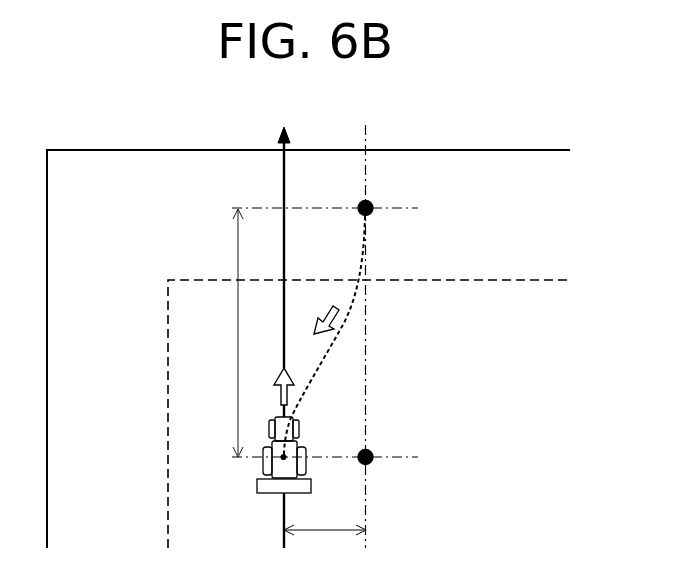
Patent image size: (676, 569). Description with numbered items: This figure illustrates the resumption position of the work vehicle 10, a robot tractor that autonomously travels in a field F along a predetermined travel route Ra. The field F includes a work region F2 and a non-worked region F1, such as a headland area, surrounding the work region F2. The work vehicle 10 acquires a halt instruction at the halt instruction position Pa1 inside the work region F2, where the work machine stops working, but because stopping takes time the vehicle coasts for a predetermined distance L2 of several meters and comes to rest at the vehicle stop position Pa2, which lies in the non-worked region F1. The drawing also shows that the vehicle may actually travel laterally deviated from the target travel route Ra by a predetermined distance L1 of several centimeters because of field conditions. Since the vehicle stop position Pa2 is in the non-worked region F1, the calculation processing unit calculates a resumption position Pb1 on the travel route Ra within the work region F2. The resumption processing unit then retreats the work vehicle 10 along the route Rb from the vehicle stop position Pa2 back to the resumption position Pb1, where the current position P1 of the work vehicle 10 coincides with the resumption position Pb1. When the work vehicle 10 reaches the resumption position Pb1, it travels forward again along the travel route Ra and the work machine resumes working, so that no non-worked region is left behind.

The field F is at (150, 150).
The non-worked region F1 is at (500, 170).
The work region F2 is at (528, 283).
The work vehicle 10 is at (308, 420).
The travel route Ra is at (283, 516).
The route Rb is at (340, 326).
The halt instruction position Pa1 is at (372, 452).
The vehicle stop position Pa2 is at (373, 204).
The current position P1 is at (283, 457).
The resumption position Pb1 is at (283, 457).
The predetermined distance L1 is at (325, 522).
The predetermined distance L2 is at (225, 333).